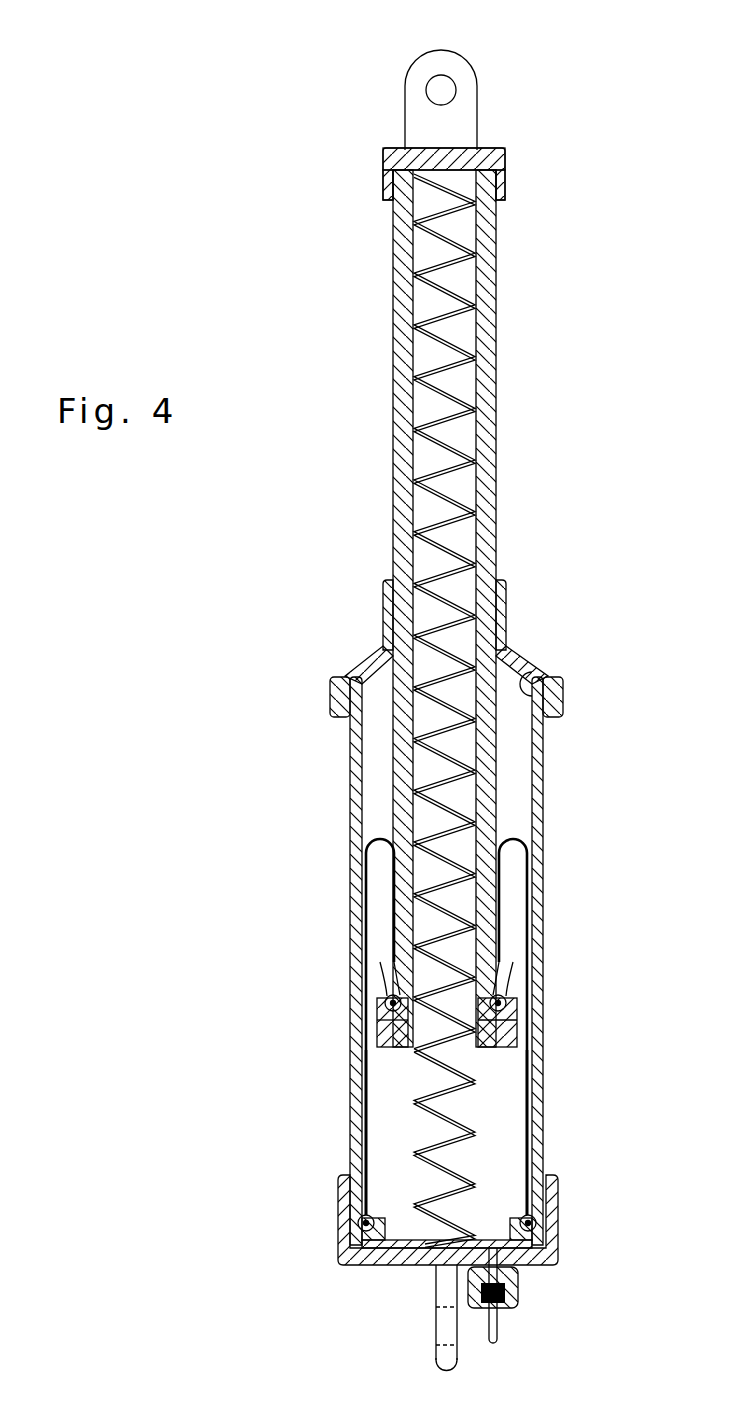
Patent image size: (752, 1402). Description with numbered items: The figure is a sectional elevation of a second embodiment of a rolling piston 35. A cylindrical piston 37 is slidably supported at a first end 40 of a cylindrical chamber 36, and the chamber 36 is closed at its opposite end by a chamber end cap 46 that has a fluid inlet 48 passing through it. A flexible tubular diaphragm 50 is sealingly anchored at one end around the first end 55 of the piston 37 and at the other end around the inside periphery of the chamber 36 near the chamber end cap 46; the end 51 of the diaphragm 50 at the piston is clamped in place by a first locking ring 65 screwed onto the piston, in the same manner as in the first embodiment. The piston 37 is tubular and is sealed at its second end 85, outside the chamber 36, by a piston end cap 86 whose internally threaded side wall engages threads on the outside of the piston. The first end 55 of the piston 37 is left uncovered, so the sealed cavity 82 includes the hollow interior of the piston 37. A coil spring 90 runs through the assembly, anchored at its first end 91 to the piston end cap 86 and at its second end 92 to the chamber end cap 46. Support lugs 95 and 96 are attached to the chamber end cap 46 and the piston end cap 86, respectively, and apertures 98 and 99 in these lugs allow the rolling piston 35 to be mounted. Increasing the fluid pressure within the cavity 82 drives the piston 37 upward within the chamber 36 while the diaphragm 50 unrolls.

The rolling piston 35 is at (552, 593).
The cylindrical chamber 36 is at (545, 950).
The cylindrical piston 37 is at (485, 392).
The first end of the chamber 40 is at (535, 668).
The chamber end cap 46 is at (387, 1258).
The fluid inlet 48 is at (494, 1328).
The flexible tubular diaphragm 50 is at (526, 840).
The end of the diaphragm 51 is at (387, 998).
The first end of the piston 55 is at (470, 1044).
The first locking ring 65 is at (513, 1042).
The sealed cavity 82 is at (510, 1173).
The second end of the piston 85 is at (430, 161).
The piston end cap 86 is at (480, 156).
The coil spring 90 is at (452, 492).
The first end of the coil spring 91 is at (490, 195).
The second end of the coil spring 92 is at (418, 1240).
The support lug 95 is at (440, 1363).
The support lug 96 is at (463, 76).
The aperture 98 is at (445, 1330).
The aperture 99 is at (440, 85).